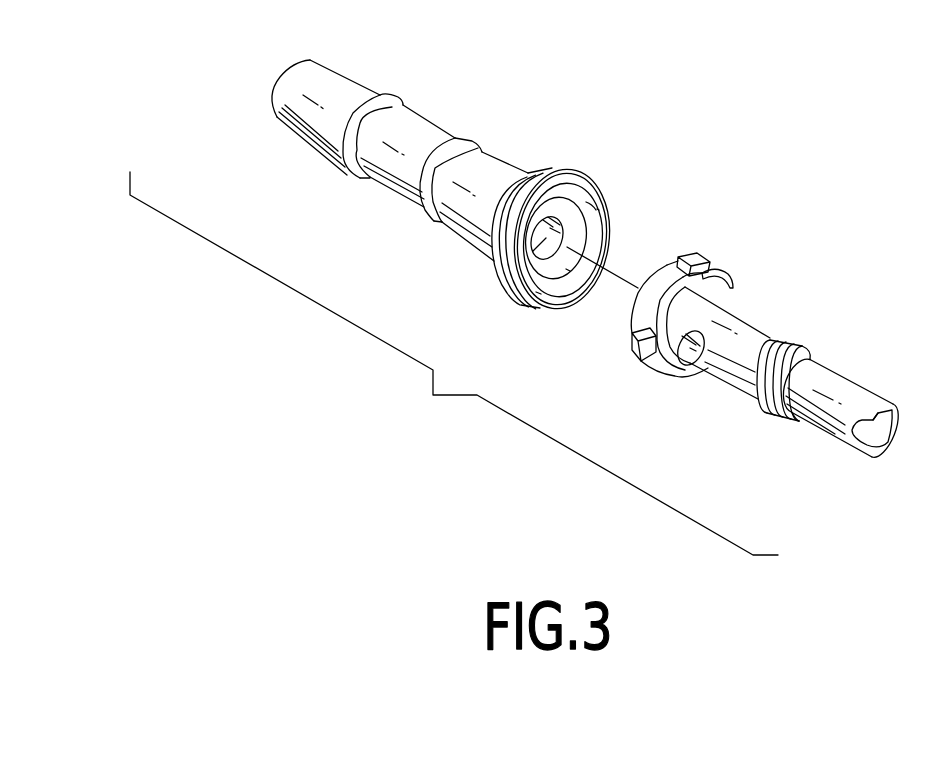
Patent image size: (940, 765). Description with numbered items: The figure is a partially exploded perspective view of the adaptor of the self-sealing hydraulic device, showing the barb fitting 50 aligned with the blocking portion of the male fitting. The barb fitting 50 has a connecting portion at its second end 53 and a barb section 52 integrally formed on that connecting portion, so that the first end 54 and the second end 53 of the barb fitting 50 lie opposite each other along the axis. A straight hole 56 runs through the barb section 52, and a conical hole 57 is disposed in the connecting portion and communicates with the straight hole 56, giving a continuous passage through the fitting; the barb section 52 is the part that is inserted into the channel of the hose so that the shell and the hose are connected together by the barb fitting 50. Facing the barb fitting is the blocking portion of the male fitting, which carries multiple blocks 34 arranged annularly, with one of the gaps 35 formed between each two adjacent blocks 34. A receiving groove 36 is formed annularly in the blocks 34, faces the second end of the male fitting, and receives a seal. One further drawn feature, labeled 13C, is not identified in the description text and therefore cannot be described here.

The barb fitting 50 is at (457, 106).
The barb section 52 is at (328, 80).
The first end 54 is at (272, 92).
The conical hole 57 is at (590, 202).
The tapered neck 13C is at (492, 271).
The straight hole 56 is at (540, 252).
The second end 53 is at (557, 303).
The blocks 34 is at (668, 371).
The gaps 35 is at (673, 263).
The receiving groove 36 is at (720, 290).